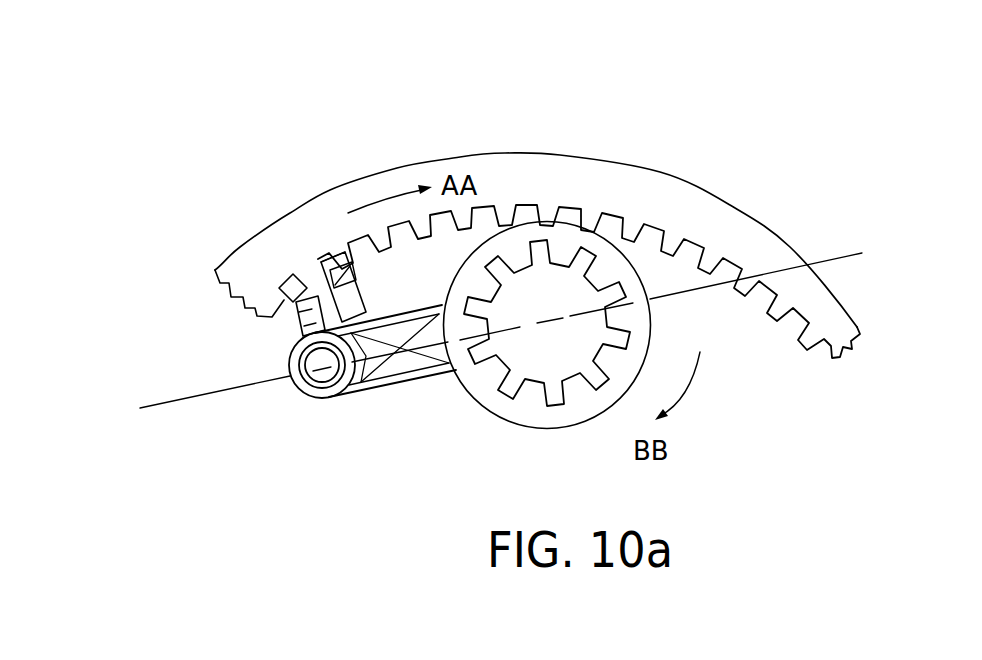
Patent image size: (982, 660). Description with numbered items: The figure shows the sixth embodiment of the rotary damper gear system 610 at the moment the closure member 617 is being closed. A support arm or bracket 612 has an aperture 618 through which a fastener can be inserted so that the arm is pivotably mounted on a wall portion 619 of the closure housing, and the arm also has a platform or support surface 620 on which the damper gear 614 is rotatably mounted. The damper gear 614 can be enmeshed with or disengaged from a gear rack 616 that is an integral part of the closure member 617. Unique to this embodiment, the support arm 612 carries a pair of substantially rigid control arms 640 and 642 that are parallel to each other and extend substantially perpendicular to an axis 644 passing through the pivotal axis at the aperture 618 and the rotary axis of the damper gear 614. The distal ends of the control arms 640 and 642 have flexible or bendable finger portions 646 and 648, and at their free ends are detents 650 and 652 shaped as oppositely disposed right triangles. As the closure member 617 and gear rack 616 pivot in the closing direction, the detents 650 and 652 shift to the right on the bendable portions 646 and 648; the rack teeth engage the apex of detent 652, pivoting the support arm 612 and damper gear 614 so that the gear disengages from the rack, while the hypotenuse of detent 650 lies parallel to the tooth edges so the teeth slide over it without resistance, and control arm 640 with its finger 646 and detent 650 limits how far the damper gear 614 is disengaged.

The rotary damper gear system 610 is at (686, 95).
The support arm or bracket 612 is at (395, 378).
The damper gear 614 is at (562, 352).
The gear rack 616 is at (819, 338).
The closure member 617 is at (744, 170).
The aperture 618 is at (318, 375).
The wall portion 619 is at (500, 470).
The platform or support surface 620 is at (634, 337).
The control arm 640 is at (303, 328).
The control arm 642 is at (346, 299).
The axis 644 is at (173, 403).
The flexible or bendable finger portion 646 is at (243, 251).
The flexible or bendable finger portion 648 is at (344, 278).
The detent 650 is at (312, 292).
The detent 652 is at (333, 262).